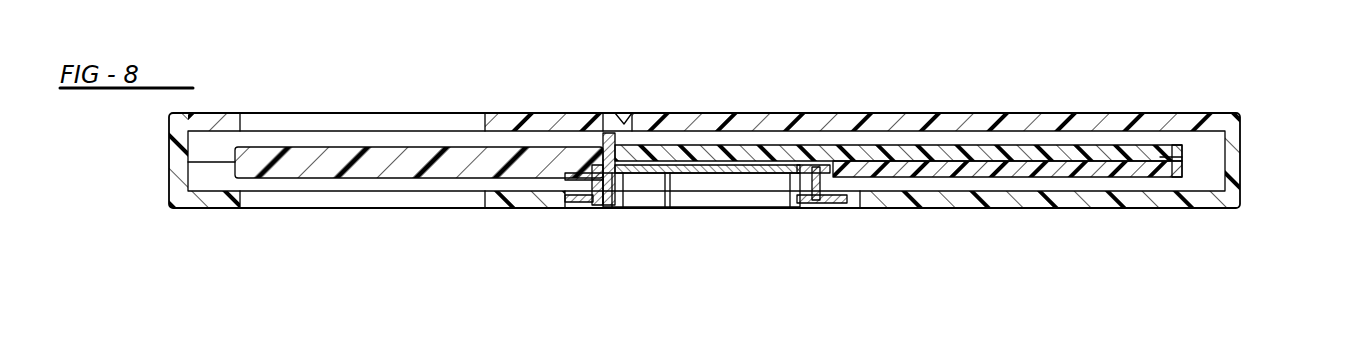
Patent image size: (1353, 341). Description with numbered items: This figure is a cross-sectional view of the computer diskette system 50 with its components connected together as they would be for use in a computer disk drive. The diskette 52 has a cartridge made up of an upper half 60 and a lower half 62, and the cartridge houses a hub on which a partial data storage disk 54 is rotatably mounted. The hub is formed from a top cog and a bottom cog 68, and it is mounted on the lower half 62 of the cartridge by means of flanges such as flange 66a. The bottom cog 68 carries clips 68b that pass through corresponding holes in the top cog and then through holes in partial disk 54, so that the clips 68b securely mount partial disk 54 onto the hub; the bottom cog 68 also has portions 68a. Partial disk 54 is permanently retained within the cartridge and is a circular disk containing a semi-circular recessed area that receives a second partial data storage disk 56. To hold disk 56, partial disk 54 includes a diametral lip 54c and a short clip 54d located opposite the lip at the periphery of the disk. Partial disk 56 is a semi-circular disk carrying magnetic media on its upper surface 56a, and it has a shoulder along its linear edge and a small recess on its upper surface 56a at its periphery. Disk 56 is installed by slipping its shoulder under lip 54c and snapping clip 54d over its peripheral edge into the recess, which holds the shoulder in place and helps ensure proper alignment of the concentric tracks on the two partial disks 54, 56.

The computer diskette system 50 is at (150, 200).
The diskette 52 is at (1188, 103).
The partial data storage disk 54 is at (411, 136).
The diametral lip 54c is at (698, 154).
The short clip 54d is at (1183, 157).
The second partial data storage disk 56 is at (1038, 136).
The upper surface 56a is at (951, 143).
The upper half 60 is at (1255, 123).
The lower half 62 is at (1255, 198).
The flange 66a is at (847, 205).
The bottom cog 68 is at (798, 203).
The bracket arm 68a is at (572, 207).
The clips 68b is at (610, 128).